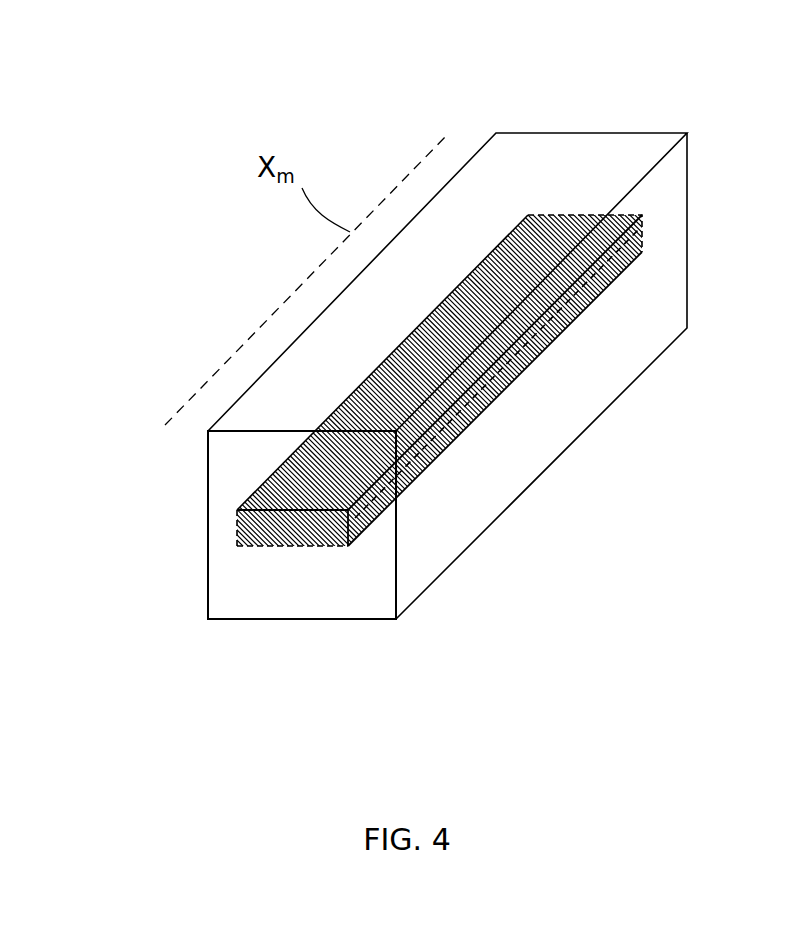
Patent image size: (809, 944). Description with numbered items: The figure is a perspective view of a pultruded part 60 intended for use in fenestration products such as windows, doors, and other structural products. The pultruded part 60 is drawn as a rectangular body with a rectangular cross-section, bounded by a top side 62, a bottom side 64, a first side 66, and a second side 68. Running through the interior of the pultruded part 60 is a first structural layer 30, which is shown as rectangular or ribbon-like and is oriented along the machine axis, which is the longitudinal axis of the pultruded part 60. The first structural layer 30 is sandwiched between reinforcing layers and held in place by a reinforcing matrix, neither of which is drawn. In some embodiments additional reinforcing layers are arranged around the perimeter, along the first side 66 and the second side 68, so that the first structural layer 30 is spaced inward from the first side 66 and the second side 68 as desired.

The pultruded part 60 is at (431, 379).
The top side 62 is at (592, 158).
The bottom side 64 is at (312, 622).
The first side 66 is at (663, 285).
The second side 68 is at (207, 497).
The first structural layer 30 is at (237, 530).